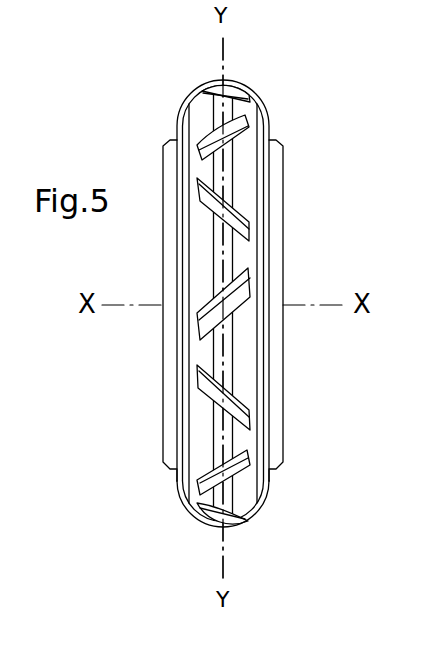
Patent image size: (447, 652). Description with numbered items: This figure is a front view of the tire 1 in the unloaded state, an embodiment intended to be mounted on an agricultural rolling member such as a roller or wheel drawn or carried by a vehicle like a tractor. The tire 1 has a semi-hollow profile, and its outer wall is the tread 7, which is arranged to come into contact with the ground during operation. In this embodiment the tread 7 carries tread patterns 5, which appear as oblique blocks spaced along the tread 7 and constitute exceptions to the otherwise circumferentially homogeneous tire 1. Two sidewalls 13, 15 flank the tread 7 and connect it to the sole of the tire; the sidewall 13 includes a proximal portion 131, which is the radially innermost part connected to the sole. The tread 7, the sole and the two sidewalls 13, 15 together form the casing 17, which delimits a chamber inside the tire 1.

The tire 1 is at (147, 118).
The tread patterns 5 is at (240, 283).
The tread 7 is at (247, 180).
The sidewall 13 is at (274, 485).
The proximal portion 131 is at (277, 382).
The sidewall 15 is at (174, 487).
The casing 17 is at (181, 508).